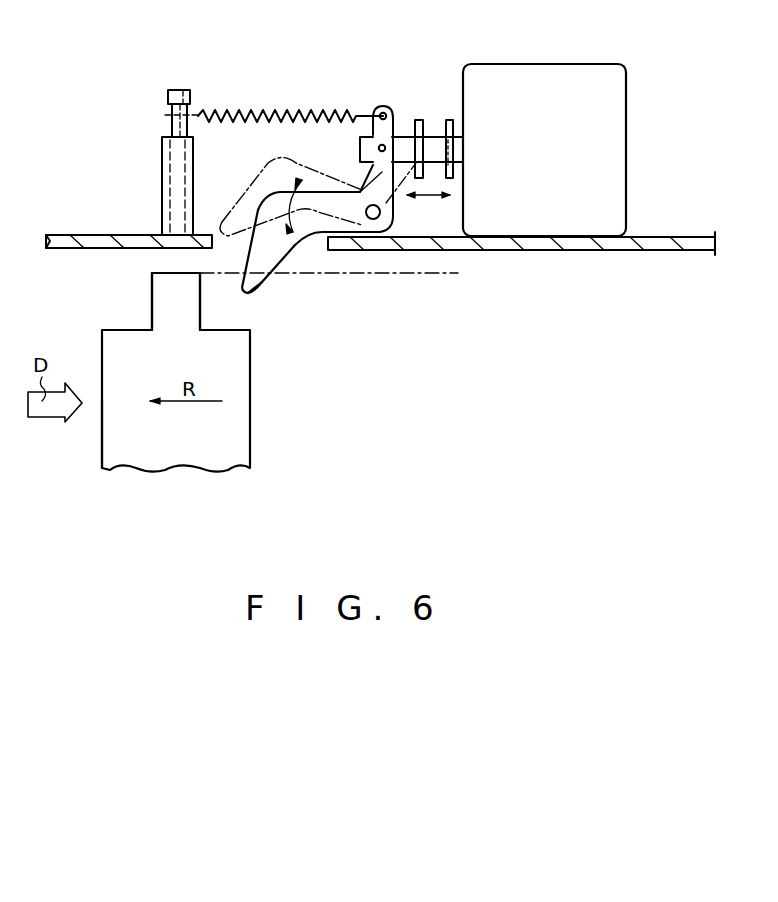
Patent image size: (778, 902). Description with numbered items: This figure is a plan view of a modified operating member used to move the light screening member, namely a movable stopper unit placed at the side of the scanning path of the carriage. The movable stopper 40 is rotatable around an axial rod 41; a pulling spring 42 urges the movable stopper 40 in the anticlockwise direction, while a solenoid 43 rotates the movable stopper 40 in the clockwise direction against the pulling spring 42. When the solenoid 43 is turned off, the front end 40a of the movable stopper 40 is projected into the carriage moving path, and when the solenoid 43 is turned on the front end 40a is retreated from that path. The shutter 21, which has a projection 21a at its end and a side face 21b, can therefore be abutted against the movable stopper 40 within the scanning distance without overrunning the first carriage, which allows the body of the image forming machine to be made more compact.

The shutter 21 is at (181, 457).
The projection 21a is at (164, 295).
The side face of developing unit 21b is at (101, 436).
The movable stopper 40 is at (281, 248).
The front end 40a is at (252, 282).
The axial rod 41 is at (374, 221).
The pulling spring 42 is at (258, 114).
The solenoid 43 is at (524, 86).